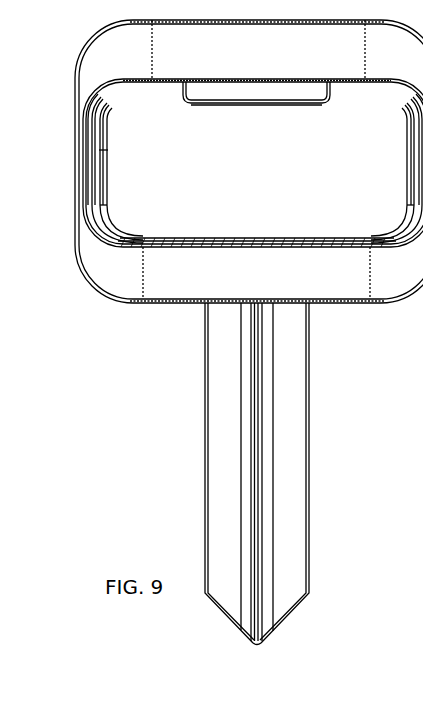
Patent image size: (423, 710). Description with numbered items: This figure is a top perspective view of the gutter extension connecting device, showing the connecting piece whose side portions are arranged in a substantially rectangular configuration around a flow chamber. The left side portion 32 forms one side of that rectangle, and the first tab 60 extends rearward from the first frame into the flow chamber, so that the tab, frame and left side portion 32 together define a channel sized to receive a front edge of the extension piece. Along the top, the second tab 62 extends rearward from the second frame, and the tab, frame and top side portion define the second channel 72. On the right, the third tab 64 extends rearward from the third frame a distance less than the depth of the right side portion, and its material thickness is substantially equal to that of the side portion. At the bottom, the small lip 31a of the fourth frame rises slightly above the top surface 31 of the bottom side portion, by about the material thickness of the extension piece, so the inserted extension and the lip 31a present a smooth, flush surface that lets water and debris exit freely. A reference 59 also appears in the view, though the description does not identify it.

The left side portion 32 is at (76, 213).
The opening 59 is at (405, 221).
The top surface 31 is at (186, 263).
The lip 31a is at (303, 243).
The second channel 72 is at (252, 92).
The second tab 62 is at (293, 106).
The first tab 60 is at (102, 188).
The third tab 64 is at (410, 134).